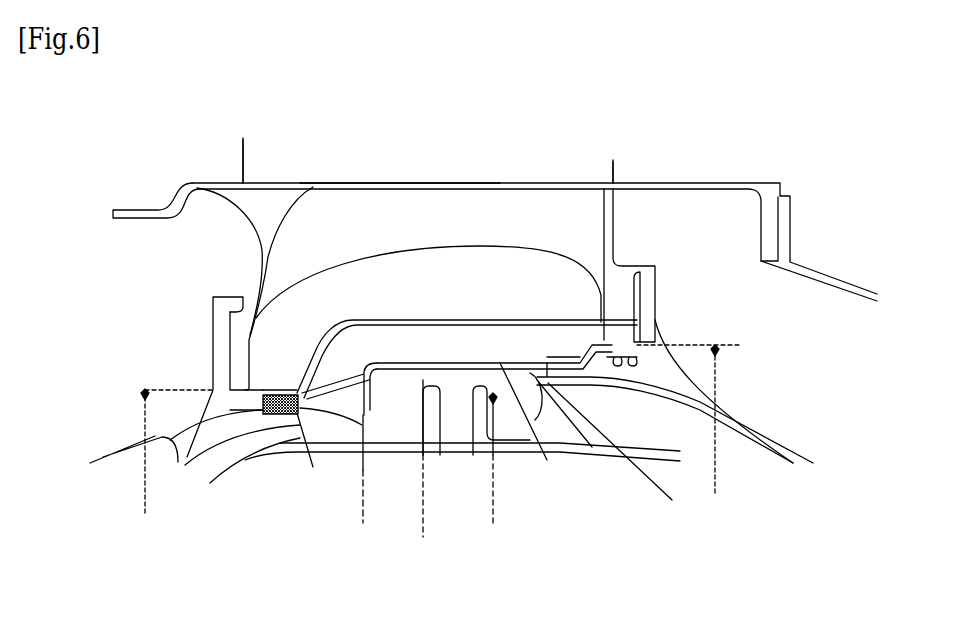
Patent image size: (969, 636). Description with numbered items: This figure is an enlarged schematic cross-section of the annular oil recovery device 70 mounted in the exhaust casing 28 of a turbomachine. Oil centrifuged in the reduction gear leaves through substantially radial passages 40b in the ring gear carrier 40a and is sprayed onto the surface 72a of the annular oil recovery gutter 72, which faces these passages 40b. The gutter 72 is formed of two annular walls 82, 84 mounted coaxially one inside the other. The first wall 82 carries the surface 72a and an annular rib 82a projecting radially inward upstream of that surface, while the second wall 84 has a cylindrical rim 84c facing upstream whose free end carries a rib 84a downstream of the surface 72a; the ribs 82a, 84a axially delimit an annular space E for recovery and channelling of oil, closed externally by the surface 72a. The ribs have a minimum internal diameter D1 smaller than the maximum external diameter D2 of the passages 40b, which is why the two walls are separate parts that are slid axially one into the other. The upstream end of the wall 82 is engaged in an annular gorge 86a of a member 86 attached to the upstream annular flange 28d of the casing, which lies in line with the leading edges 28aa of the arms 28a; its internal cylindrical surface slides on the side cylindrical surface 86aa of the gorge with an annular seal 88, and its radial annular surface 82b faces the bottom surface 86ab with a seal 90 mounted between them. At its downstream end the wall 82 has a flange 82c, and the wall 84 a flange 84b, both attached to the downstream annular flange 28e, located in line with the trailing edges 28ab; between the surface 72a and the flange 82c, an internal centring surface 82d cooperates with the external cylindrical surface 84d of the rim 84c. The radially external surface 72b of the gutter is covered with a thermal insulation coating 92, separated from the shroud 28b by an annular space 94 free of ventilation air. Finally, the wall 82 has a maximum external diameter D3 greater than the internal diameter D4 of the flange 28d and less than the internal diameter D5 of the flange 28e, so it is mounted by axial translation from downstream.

The exhaust casing 28 is at (676, 159).
The arm 28a is at (568, 160).
The leading edge 28aa is at (238, 162).
The trailing edge 28ab is at (618, 172).
The shroud 28b is at (397, 185).
The upstream annular flange 28d is at (213, 341).
The downstream annular flange 28e is at (618, 196).
The device 70 is at (356, 218).
The annular oil recovery gutter 72 is at (514, 314).
The surface 72a is at (423, 364).
The radially external annular surface 72b is at (540, 455).
The first annular wall 82 is at (353, 345).
The annular rib 82a is at (366, 424).
The radial annular surface 82b is at (270, 392).
The annular flange 82c is at (638, 338).
The internal cylindrical centring surface 82d is at (551, 360).
The second annular wall 84 is at (746, 399).
The annular rib 84a is at (543, 400).
The annular flange 84b is at (624, 307).
The cylindrical rim 84c is at (610, 384).
The external cylindrical surface 84d is at (626, 456).
The member 86 is at (112, 452).
The annular gorge 86a is at (271, 437).
The side cylindrical surface 86aa is at (364, 438).
The annular bottom surface 86ab is at (266, 426).
The annular seal 88 is at (288, 414).
The annular seal 90 is at (200, 325).
The annular thermal insulation coating 92 is at (476, 283).
The annular space 94 is at (428, 260).
The ring gear carrier 40a is at (553, 453).
The passages 40b is at (488, 457).
The annular space E is at (402, 391).
The minimum internal diameter D1 is at (363, 523).
The maximum external diameter D2 is at (493, 530).
The maximum external diameter D3 is at (424, 461).
The internal diameter D4 is at (143, 483).
The internal diameter D5 is at (717, 453).